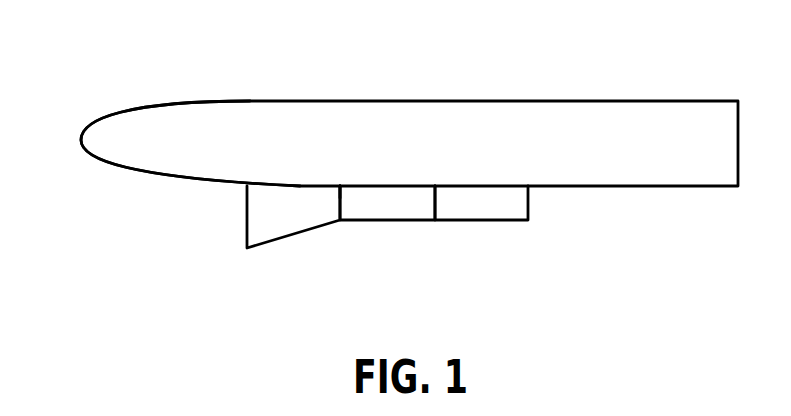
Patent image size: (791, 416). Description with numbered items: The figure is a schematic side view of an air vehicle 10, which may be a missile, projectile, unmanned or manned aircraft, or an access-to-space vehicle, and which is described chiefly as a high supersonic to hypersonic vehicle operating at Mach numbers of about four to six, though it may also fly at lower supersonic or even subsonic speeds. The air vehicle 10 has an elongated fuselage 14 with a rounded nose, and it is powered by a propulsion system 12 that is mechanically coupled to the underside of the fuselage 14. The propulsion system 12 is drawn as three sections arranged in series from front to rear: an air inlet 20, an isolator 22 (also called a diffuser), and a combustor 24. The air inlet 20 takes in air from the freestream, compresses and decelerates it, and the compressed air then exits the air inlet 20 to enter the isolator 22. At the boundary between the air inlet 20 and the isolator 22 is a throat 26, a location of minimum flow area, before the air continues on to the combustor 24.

The air vehicle 10 is at (105, 86).
The propulsion system 12 is at (346, 216).
The fuselage 14 is at (135, 155).
The air inlet 20 is at (295, 208).
The isolator 22 is at (393, 208).
The combustor 24 is at (492, 208).
The throat 26 is at (342, 197).